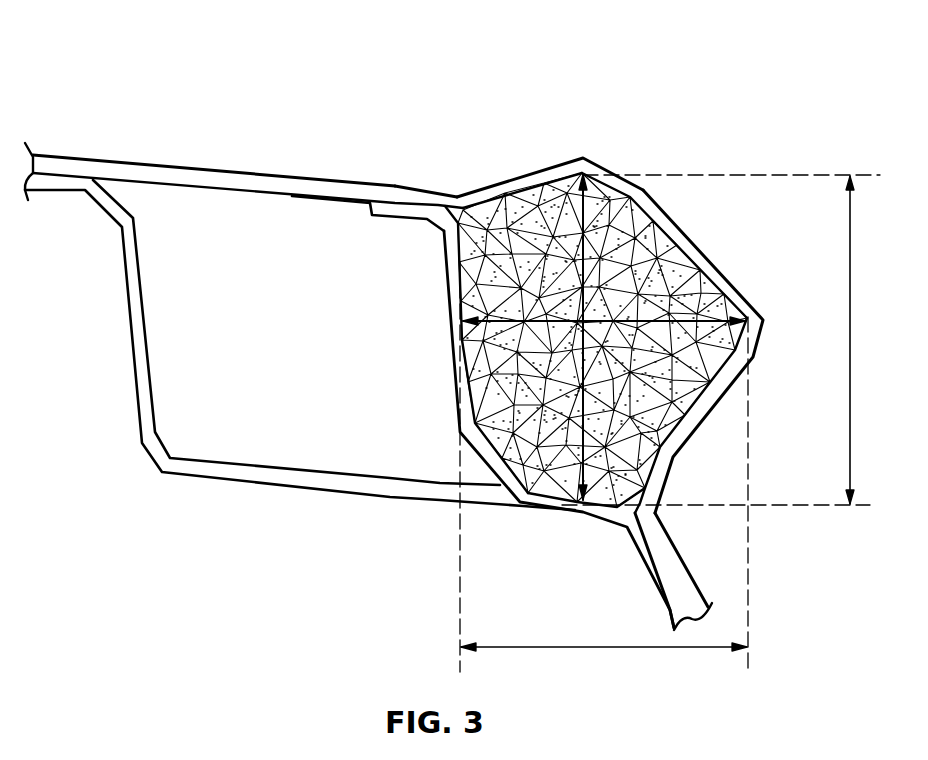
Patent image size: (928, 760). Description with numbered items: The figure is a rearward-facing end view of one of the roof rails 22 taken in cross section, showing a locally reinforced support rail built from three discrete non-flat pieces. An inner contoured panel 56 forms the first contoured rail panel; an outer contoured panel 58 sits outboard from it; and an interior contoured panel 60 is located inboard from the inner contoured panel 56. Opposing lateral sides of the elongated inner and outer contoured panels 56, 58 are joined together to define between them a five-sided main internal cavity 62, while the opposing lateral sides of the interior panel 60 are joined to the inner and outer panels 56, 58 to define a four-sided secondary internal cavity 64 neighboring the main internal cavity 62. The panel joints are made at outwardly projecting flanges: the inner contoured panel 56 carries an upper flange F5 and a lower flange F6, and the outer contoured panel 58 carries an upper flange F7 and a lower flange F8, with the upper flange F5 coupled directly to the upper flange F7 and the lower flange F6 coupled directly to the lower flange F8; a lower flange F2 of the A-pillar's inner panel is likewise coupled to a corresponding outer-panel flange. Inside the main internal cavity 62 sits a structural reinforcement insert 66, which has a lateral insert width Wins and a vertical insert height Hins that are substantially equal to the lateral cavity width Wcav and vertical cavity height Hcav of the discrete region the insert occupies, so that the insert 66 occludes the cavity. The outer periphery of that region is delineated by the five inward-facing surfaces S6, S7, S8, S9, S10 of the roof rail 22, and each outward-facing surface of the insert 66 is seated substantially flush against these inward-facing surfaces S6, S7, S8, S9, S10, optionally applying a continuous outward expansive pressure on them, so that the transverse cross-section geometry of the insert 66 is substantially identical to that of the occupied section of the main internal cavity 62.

The roof rail 22 is at (258, 84).
The inner contoured panel 56 is at (458, 383).
The outer contoured panel 58 is at (340, 182).
The interior contoured panel 60 is at (134, 372).
The main internal cavity 62 is at (445, 206).
The secondary internal cavity 64 is at (272, 247).
The structural reinforcement insert 66 is at (567, 173).
The lower flange F2 is at (550, 98).
The upper flange F5 is at (397, 221).
The lower flange F6 is at (665, 598).
The upper flange F7 is at (403, 187).
The lower flange F8 is at (697, 585).
The inward-facing surface S6 is at (562, 474).
The inward-facing surface S7 is at (675, 352).
The inward-facing surface S8 is at (710, 273).
The inward-facing surface S9 is at (530, 213).
The inward-facing surface S10 is at (457, 343).
The vertical insert height Hins is at (642, 208).
The vertical cavity height Hcav is at (842, 247).
The lateral insert width Wins is at (514, 318).
The lateral cavity width Wcav is at (616, 649).